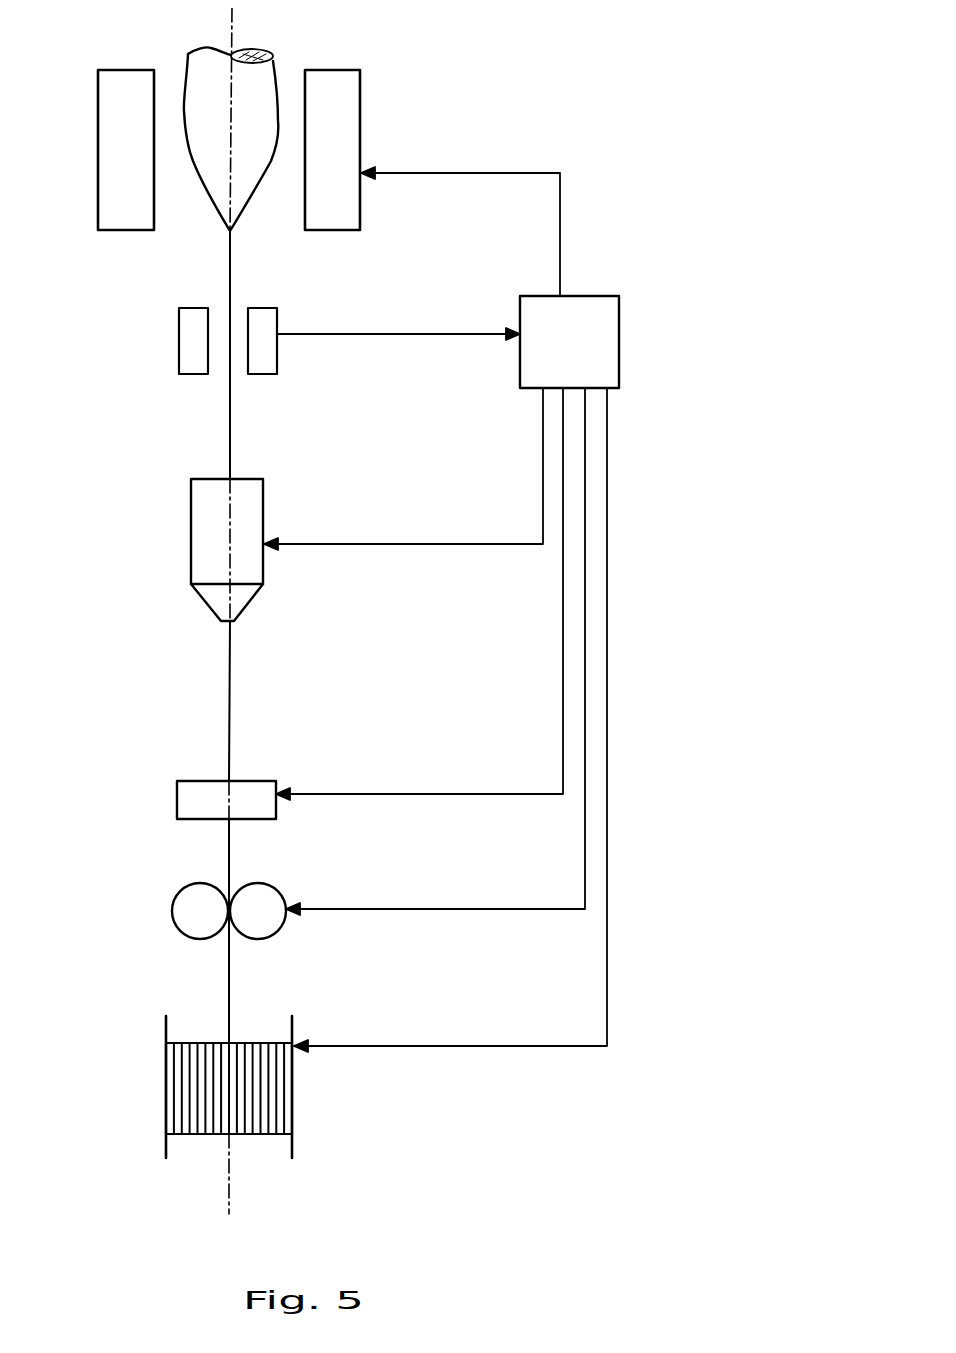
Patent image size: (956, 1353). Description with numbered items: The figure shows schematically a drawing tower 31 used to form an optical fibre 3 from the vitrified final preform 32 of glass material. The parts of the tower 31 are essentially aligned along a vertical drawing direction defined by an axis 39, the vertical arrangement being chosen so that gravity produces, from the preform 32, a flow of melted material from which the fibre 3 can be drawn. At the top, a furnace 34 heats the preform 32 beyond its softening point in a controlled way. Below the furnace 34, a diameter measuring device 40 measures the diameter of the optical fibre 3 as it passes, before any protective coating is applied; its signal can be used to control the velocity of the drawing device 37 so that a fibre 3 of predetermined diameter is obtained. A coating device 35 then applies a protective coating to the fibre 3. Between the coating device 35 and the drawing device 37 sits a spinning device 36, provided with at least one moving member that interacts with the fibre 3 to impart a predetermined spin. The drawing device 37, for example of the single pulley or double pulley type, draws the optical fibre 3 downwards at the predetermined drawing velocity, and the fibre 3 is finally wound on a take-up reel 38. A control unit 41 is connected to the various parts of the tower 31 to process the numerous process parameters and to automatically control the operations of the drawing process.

The drawing tower 31 is at (541, 44).
The preform 32 is at (260, 78).
The furnace 34 is at (345, 135).
The diameter measuring device 40 is at (183, 338).
The control unit 41 is at (528, 368).
The coating device 35 is at (205, 504).
The optical fibre 3 is at (227, 702).
The spinning device 36 is at (190, 793).
The drawing device 37 is at (192, 923).
The take-up reel 38 is at (273, 1095).
The axis 39 is at (230, 1167).